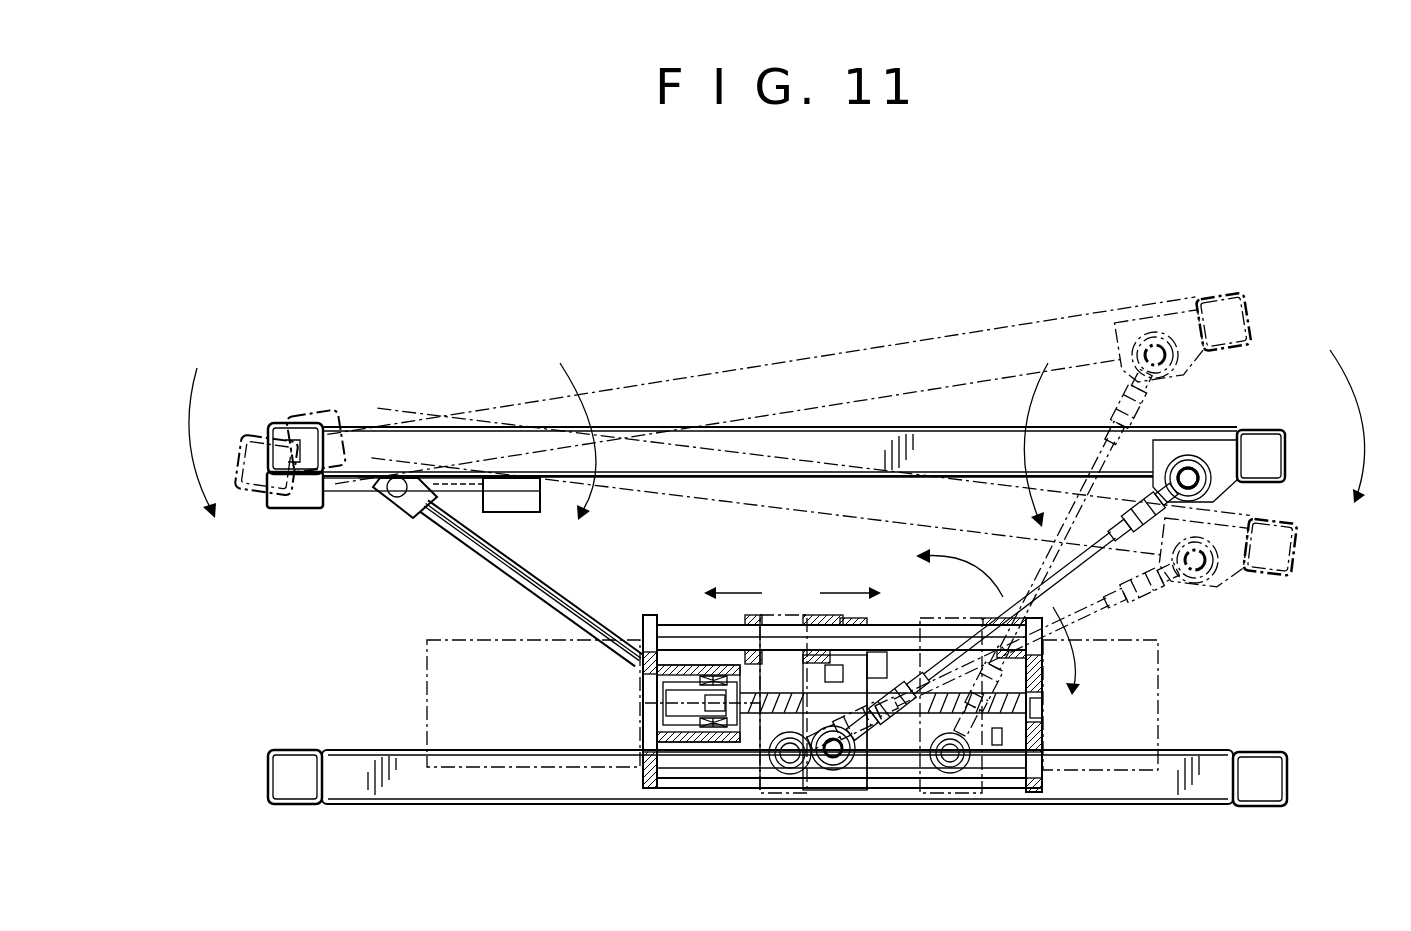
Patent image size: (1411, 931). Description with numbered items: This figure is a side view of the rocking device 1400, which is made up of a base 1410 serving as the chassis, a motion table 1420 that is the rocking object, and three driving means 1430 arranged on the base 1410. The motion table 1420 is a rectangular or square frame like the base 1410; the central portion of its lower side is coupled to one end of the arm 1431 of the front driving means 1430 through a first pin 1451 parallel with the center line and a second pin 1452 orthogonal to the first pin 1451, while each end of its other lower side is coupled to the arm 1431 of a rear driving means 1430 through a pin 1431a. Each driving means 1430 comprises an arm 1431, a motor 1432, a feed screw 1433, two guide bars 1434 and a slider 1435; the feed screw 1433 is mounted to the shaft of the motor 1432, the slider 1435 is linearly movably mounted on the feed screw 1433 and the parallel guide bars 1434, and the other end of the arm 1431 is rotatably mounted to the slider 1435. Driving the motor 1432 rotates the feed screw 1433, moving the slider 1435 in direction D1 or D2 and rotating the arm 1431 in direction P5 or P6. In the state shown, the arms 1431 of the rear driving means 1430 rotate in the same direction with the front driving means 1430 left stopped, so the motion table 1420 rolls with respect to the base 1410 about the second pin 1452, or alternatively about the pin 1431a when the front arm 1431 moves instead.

The rocking device 1400 is at (688, 316).
The base 1410 is at (1150, 788).
The motion table 1420 is at (1272, 463).
The driving means 1430 is at (789, 820).
The arm 1431 is at (530, 590).
The pin 1431a is at (1188, 470).
The motor 1432 is at (430, 668).
The feed screw 1433 is at (1042, 702).
The guide bars 1434 is at (697, 780).
The slider 1435 is at (850, 775).
The first pin 1451 is at (343, 490).
The second pin 1452 is at (395, 503).